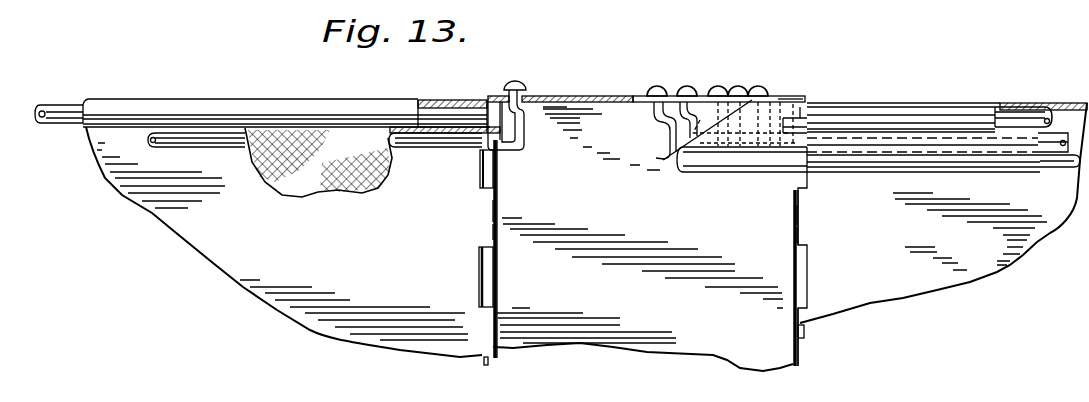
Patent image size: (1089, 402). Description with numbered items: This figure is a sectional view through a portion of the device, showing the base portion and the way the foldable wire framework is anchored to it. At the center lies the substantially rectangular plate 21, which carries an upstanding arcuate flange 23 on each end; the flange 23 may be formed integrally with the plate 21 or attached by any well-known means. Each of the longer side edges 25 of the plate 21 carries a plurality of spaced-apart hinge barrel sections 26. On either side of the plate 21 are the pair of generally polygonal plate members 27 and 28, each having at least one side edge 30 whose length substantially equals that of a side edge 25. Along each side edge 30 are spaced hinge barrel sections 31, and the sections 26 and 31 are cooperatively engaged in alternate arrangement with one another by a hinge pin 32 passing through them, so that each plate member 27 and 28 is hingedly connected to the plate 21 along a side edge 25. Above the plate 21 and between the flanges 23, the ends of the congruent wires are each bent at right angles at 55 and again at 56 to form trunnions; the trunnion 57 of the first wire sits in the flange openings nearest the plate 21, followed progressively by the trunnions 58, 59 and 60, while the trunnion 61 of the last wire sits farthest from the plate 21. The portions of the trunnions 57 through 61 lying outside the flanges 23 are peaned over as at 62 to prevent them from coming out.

The rectangular plate 21 is at (650, 221).
The arcuate flange 23 is at (577, 95).
The longer side edge 25 is at (493, 228).
The hinge barrel section 26 is at (490, 169).
The plate member 27 is at (384, 298).
The plate member 28 is at (920, 279).
The side edge 30 is at (480, 169).
The hinge barrel section 31 is at (493, 212).
The hinge pin 32 is at (833, 172).
The right-angle bend 55 is at (790, 127).
The right-angle bend 56 is at (765, 113).
The trunnion 57 is at (758, 88).
The trunnion 58 is at (740, 88).
The trunnion 59 is at (719, 88).
The trunnion 60 is at (697, 90).
The trunnion 61 is at (652, 112).
The peaned-over end 62 is at (682, 88).